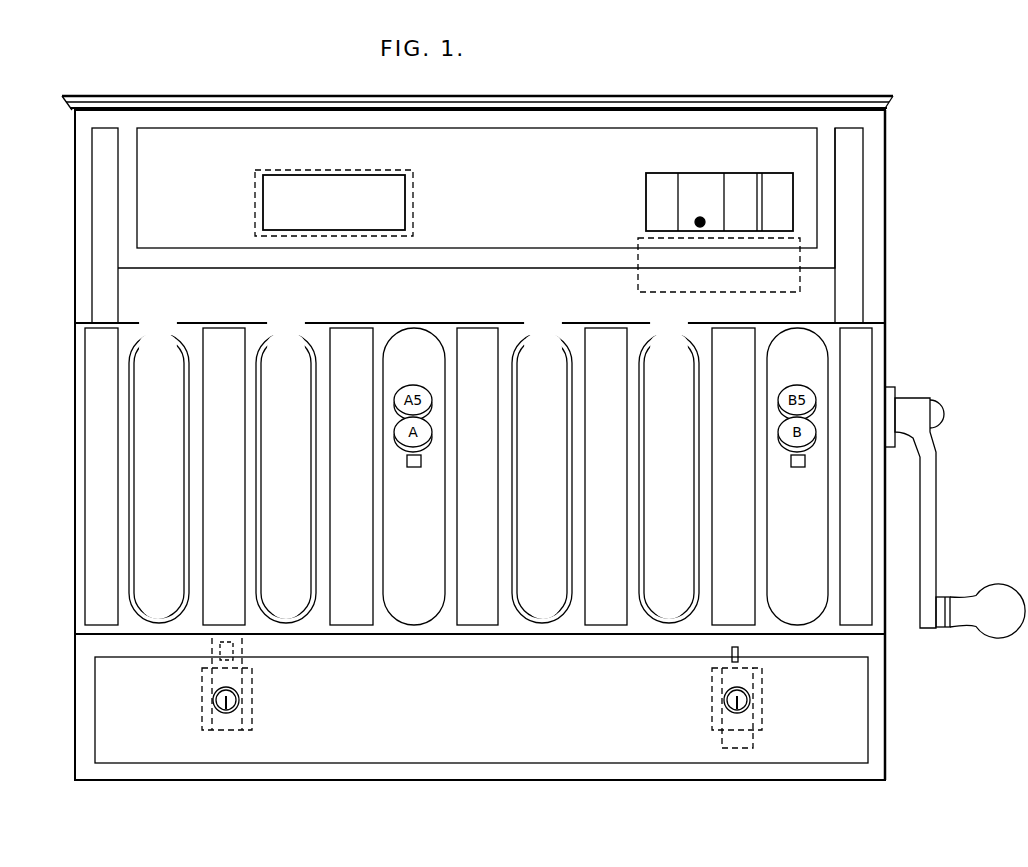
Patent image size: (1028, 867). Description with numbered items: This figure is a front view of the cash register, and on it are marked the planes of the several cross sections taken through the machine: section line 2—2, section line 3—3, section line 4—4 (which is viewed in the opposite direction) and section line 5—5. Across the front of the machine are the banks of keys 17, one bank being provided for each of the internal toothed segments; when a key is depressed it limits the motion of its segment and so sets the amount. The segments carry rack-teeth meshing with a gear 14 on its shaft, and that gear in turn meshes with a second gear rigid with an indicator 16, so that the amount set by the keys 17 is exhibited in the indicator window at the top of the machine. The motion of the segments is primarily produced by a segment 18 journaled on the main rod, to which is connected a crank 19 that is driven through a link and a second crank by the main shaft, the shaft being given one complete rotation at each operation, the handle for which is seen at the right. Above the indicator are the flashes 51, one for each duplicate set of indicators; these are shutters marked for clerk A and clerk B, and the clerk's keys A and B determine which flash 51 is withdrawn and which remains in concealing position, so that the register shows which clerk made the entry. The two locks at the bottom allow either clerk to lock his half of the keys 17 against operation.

The section line 2— 2 is at (846, 100).
The section line 3— 3 is at (758, 100).
The section line 4— 4 is at (352, 140).
The section line 5— 5 is at (112, 110).
The gear 14 is at (357, 750).
The indicator 16 is at (776, 174).
The bank of keys 17 is at (276, 548).
The segment 18 is at (238, 684).
The crank 19 is at (232, 651).
The flash 51 is at (385, 176).